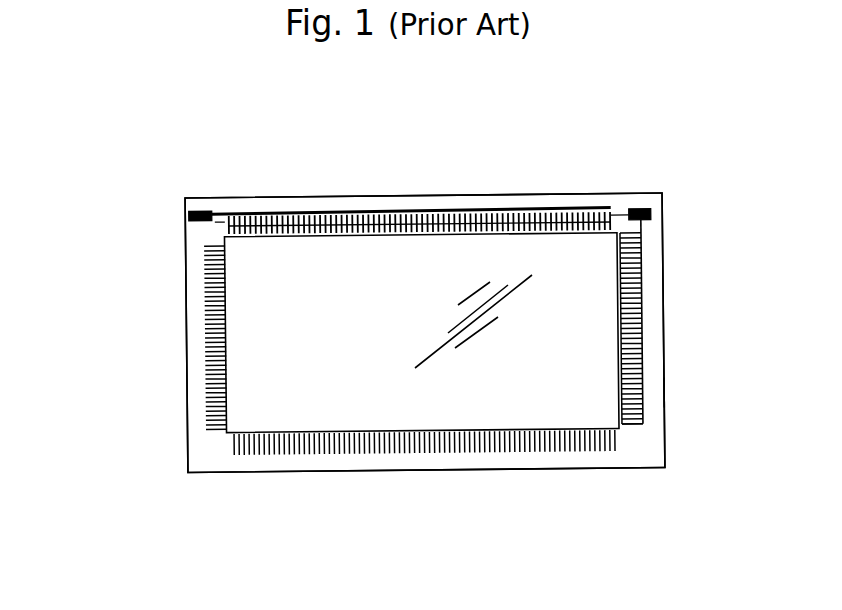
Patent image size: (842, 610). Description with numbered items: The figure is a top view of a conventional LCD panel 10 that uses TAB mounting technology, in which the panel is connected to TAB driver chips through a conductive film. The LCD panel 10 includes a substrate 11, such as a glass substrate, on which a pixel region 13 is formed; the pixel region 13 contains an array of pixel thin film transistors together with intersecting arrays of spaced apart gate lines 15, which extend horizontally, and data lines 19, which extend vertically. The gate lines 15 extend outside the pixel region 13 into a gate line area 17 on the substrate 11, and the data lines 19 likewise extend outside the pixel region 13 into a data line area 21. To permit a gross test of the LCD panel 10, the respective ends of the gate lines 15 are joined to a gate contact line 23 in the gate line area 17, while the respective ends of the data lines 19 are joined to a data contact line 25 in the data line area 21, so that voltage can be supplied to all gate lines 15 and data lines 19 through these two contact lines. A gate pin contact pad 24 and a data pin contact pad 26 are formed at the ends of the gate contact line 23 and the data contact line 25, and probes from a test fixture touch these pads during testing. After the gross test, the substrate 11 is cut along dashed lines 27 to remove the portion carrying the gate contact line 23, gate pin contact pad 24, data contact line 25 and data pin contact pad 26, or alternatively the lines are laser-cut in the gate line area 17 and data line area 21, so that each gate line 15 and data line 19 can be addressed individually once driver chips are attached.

The LCD panel 10 is at (117, 175).
The substrate 11 is at (187, 337).
The pixel region 13 is at (418, 397).
The gate lines 15 is at (639, 426).
The gate line area 17 is at (653, 395).
The data lines 19 is at (498, 222).
The data line area 21 is at (453, 205).
The gate contact line 23 is at (644, 320).
The gate pin contact pad 24 is at (646, 211).
The data contact line 25 is at (323, 210).
The data pin contact pad 26 is at (200, 210).
The dashed lines 27 is at (643, 236).